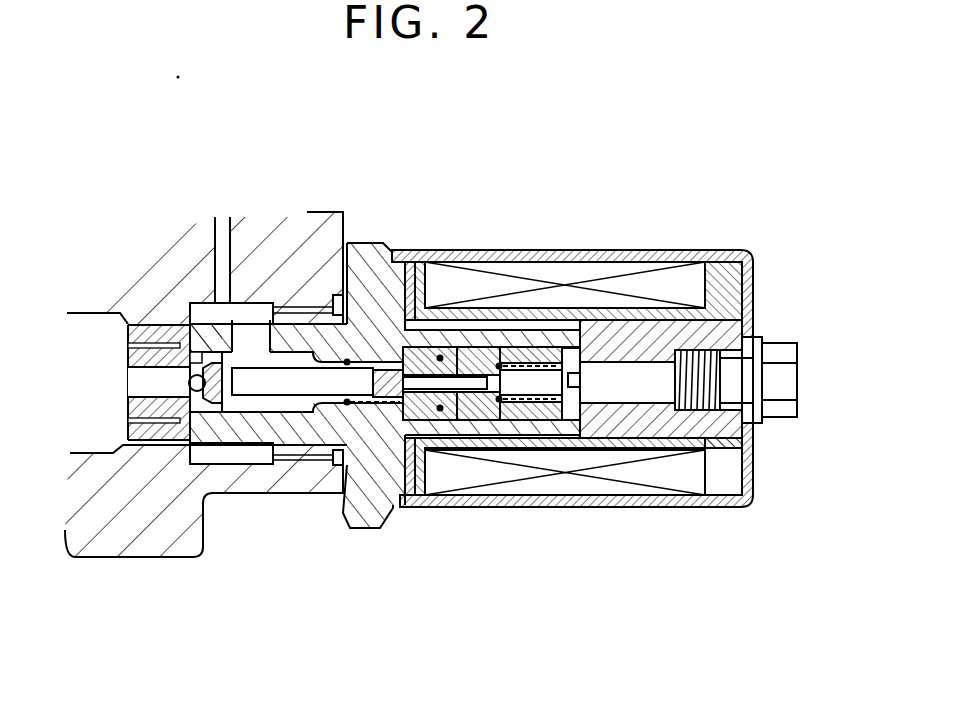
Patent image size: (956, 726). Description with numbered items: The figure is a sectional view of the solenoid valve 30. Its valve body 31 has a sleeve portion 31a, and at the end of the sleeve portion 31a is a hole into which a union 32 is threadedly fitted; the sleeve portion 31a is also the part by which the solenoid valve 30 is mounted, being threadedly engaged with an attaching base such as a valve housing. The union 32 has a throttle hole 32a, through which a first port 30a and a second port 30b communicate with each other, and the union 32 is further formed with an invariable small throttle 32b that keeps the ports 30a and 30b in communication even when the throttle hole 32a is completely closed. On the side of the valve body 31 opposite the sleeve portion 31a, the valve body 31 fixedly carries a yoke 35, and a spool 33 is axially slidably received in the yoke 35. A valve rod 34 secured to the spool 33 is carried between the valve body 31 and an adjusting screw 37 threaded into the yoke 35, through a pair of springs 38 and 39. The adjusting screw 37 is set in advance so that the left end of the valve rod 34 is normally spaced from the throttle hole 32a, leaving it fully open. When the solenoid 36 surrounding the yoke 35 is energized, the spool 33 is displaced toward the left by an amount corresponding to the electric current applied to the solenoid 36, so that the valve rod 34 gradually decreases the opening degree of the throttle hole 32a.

The solenoid valve 30 is at (590, 195).
The first port 30a is at (136, 372).
The second port 30b is at (253, 338).
The valve body 31 is at (407, 241).
The sleeve portion 31a is at (218, 402).
The union 32 is at (137, 410).
The throttle hole 32a is at (196, 383).
The invariable small throttle 32b is at (192, 352).
The spool 33 is at (490, 418).
The valve rod 34 is at (257, 395).
The yoke 35 is at (635, 433).
The solenoid 36 is at (665, 287).
The adjusting screw 37 is at (655, 390).
The spring 38 is at (368, 420).
The spring 39 is at (520, 410).